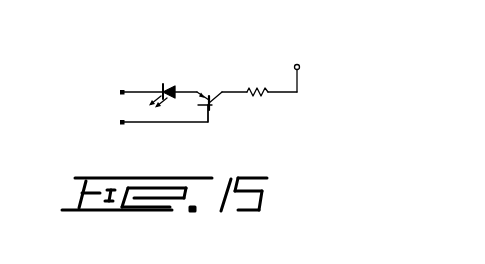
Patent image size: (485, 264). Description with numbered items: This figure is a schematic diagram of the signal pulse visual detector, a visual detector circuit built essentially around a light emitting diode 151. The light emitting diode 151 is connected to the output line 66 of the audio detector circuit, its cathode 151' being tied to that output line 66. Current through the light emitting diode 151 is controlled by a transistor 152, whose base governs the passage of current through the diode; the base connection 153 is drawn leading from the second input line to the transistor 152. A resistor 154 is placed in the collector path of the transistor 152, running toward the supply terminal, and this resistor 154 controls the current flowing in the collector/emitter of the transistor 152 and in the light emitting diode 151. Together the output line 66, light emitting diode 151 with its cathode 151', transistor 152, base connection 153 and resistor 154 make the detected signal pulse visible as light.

The output line 66 is at (133, 90).
The light emitting diode 151 is at (185, 76).
The cathode 151' is at (161, 72).
The transistor 152 is at (223, 94).
The base lead of transistor 153 is at (213, 105).
The resistor 154 is at (259, 89).